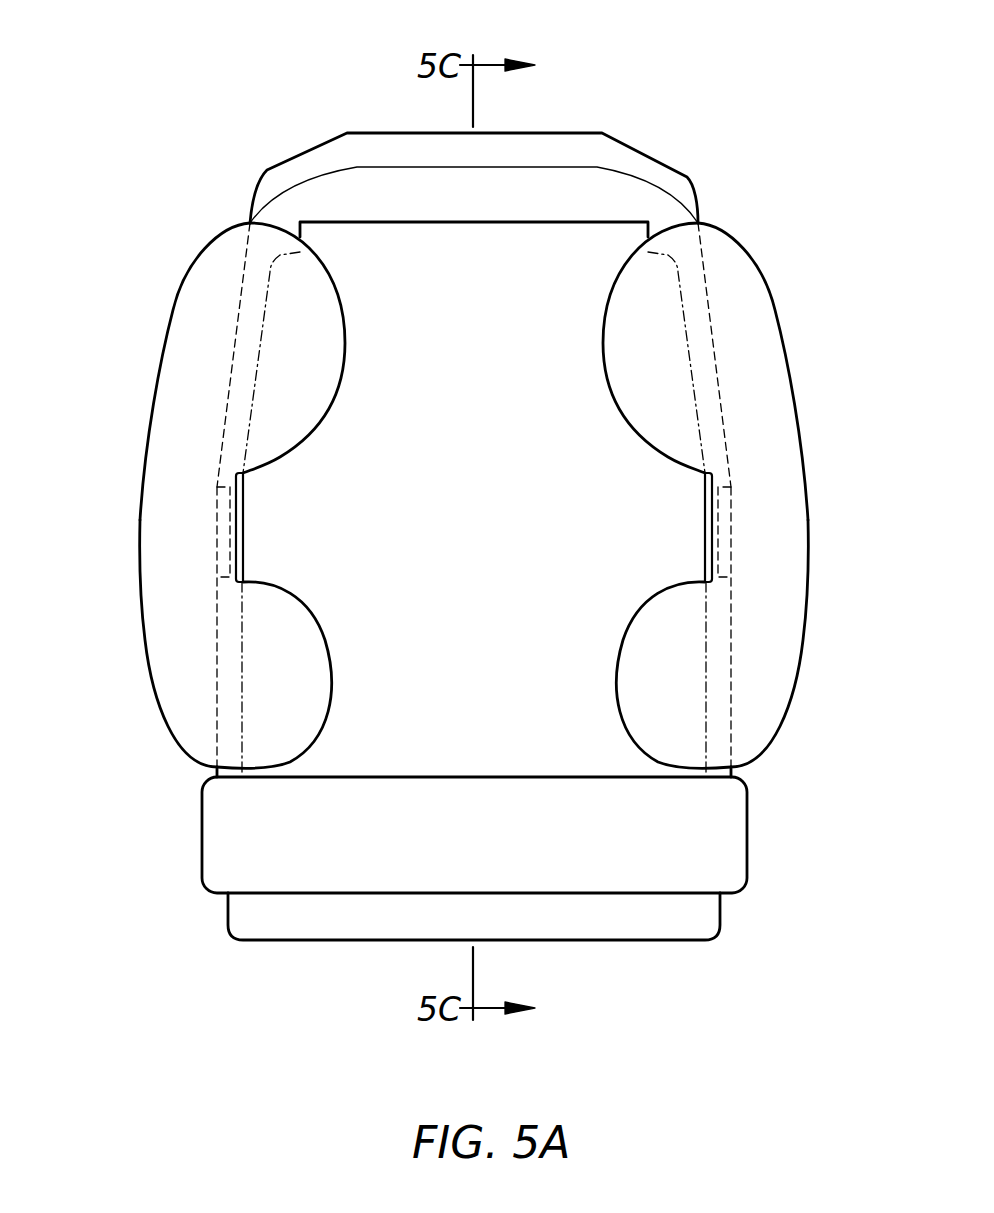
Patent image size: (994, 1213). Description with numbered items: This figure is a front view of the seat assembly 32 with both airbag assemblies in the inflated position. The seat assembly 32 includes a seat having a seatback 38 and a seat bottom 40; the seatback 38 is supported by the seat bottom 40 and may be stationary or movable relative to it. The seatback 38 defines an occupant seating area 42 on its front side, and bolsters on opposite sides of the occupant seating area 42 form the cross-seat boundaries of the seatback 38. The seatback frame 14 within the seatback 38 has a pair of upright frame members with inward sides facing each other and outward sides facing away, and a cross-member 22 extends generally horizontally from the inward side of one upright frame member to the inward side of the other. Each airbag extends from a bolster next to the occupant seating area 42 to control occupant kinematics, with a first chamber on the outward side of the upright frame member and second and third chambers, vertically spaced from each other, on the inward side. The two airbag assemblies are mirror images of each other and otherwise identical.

The seatback frame 14 is at (459, 125).
The seatback 38 is at (384, 120).
The cross-member 22 is at (553, 147).
The occupant seating area 42 is at (488, 396).
The seat bottom 40 is at (750, 830).
The seat assembly 32 is at (158, 872).